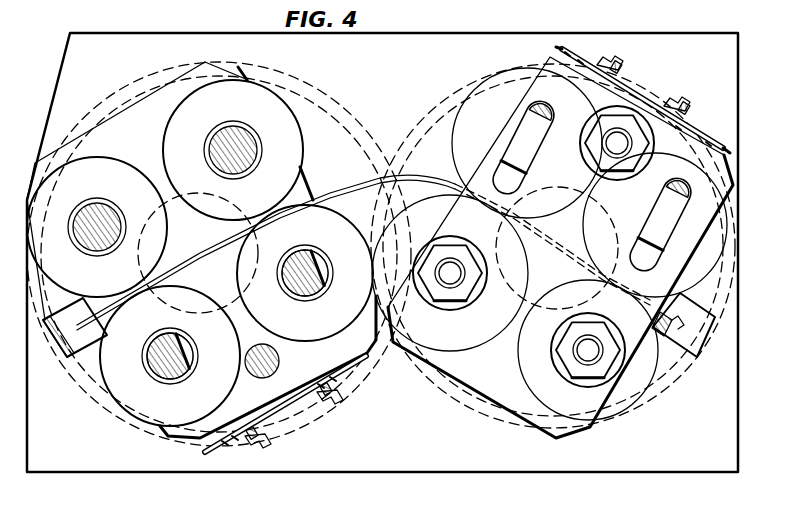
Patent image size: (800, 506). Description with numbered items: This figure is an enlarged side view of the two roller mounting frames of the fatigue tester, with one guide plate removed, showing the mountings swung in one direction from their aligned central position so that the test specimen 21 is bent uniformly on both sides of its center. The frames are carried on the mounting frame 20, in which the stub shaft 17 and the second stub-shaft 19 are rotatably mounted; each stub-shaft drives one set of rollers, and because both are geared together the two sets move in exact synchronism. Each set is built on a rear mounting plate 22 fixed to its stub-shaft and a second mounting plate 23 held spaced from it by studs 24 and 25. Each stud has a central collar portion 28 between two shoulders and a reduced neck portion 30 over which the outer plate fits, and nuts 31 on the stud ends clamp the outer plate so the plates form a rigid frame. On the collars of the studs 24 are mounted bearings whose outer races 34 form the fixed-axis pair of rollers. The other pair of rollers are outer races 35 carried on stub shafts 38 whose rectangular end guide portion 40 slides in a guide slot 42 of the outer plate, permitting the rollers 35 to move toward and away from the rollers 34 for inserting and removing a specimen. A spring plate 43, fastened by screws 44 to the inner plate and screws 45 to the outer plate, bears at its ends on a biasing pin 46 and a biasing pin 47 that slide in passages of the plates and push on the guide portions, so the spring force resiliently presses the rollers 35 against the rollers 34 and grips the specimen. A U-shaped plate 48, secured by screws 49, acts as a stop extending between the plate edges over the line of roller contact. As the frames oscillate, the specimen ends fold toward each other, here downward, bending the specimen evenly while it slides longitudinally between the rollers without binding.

The stub shaft 17 is at (450, 273).
The second stub-shaft 19 is at (260, 243).
The mounting frame 20 is at (473, 460).
The test specimen 21 is at (378, 174).
The rear mounting plate 22 is at (218, 70).
The second mounting plate 23 is at (537, 67).
The studs 24 is at (458, 284).
The studs 25 is at (273, 360).
The central collar portion 28 is at (247, 128).
The reduced neck portion 30 is at (247, 145).
The nuts 31 is at (433, 282).
The outer races 34 is at (163, 135).
The outer race 35 is at (240, 275).
The stub shafts 38 is at (313, 288).
The end guide portion 40 is at (327, 278).
The guide slot 42 is at (500, 178).
The spring plate 43 is at (290, 404).
The screws 44 is at (260, 432).
The screws 45 is at (616, 70).
The biasing pin 46 is at (206, 444).
The biasing pin 47 is at (560, 52).
The U-shaped plate 48 is at (52, 352).
The screws 49 is at (673, 345).